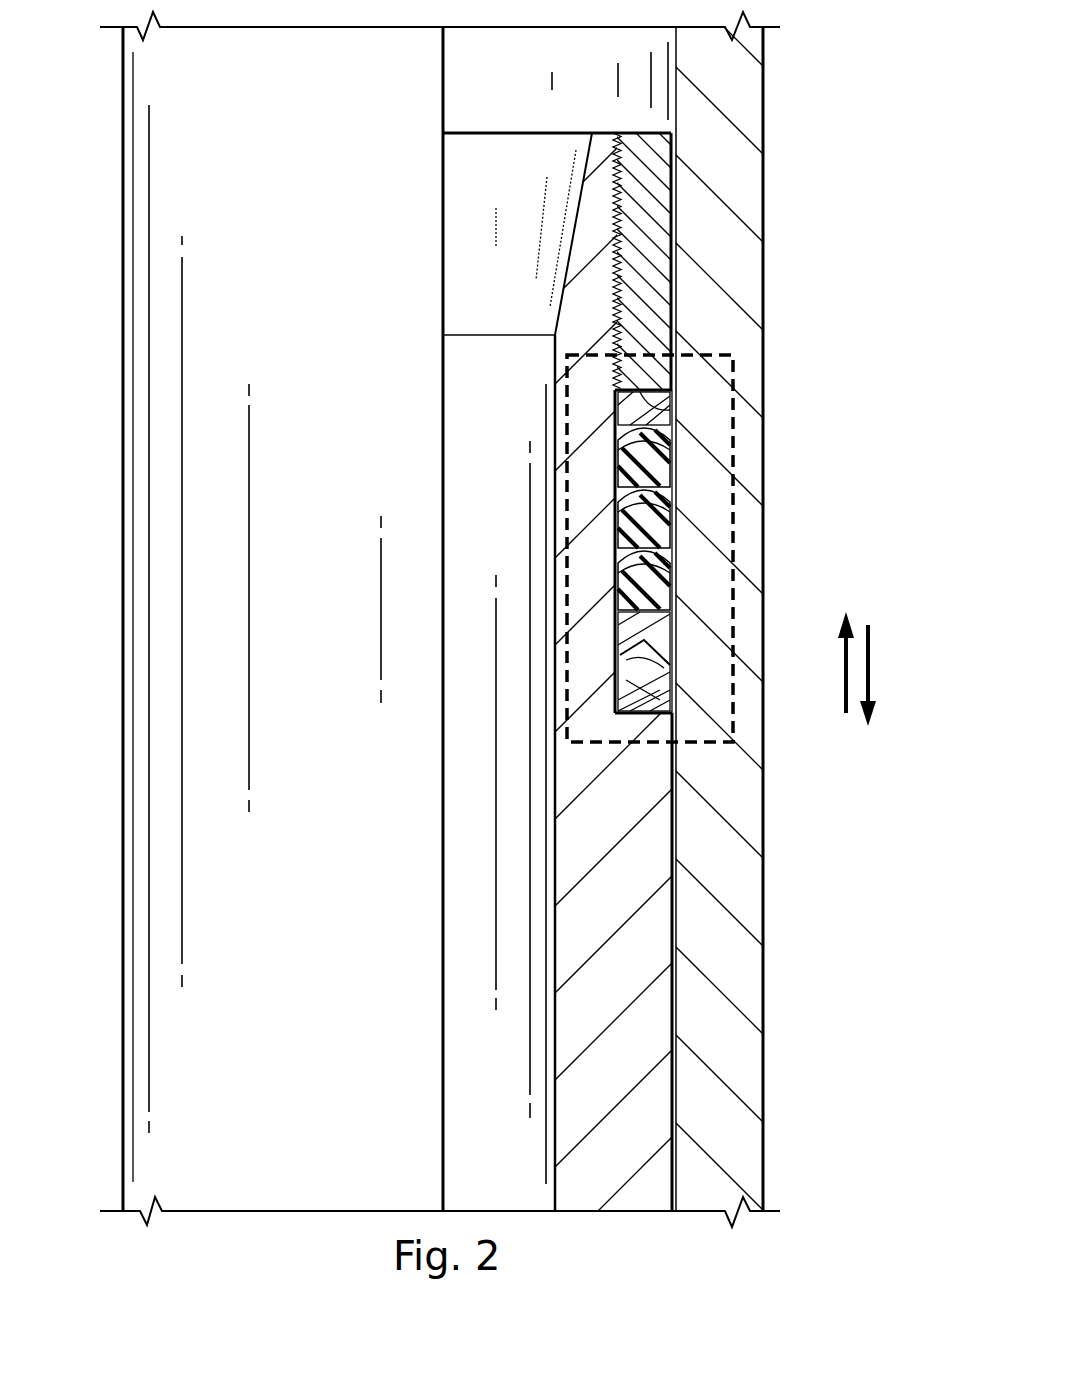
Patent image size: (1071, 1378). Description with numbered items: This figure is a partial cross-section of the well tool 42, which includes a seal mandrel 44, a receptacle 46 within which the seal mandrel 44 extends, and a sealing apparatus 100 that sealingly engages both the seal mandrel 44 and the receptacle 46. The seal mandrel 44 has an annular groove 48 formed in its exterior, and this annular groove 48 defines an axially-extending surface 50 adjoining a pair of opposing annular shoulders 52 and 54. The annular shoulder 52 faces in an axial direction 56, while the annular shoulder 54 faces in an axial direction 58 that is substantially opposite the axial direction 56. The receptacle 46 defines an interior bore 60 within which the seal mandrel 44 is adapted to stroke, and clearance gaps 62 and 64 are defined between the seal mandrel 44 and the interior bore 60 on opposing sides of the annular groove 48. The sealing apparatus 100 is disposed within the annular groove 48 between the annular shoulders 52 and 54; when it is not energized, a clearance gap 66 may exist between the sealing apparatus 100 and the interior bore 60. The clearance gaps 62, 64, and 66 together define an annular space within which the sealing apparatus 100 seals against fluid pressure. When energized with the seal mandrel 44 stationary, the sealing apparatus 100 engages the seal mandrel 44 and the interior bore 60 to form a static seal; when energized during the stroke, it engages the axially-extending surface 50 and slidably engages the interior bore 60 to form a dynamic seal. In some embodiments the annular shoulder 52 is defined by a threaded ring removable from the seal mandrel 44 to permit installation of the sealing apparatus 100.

The well tool 42 is at (106, 170).
The seal mandrel 44 is at (508, 132).
The receptacle 46 is at (763, 715).
The annular groove 48 is at (628, 714).
The axially-extending surface 50 is at (615, 422).
The annular shoulder 52 is at (672, 400).
The annular shoulder 54 is at (662, 700).
The axial direction 56 is at (870, 662).
The axial direction 58 is at (844, 675).
The interior bore 60 is at (668, 605).
The clearance gap 62 is at (673, 262).
The clearance gap 64 is at (678, 848).
The clearance gap 66 is at (672, 548).
The sealing apparatus 100 is at (605, 346).